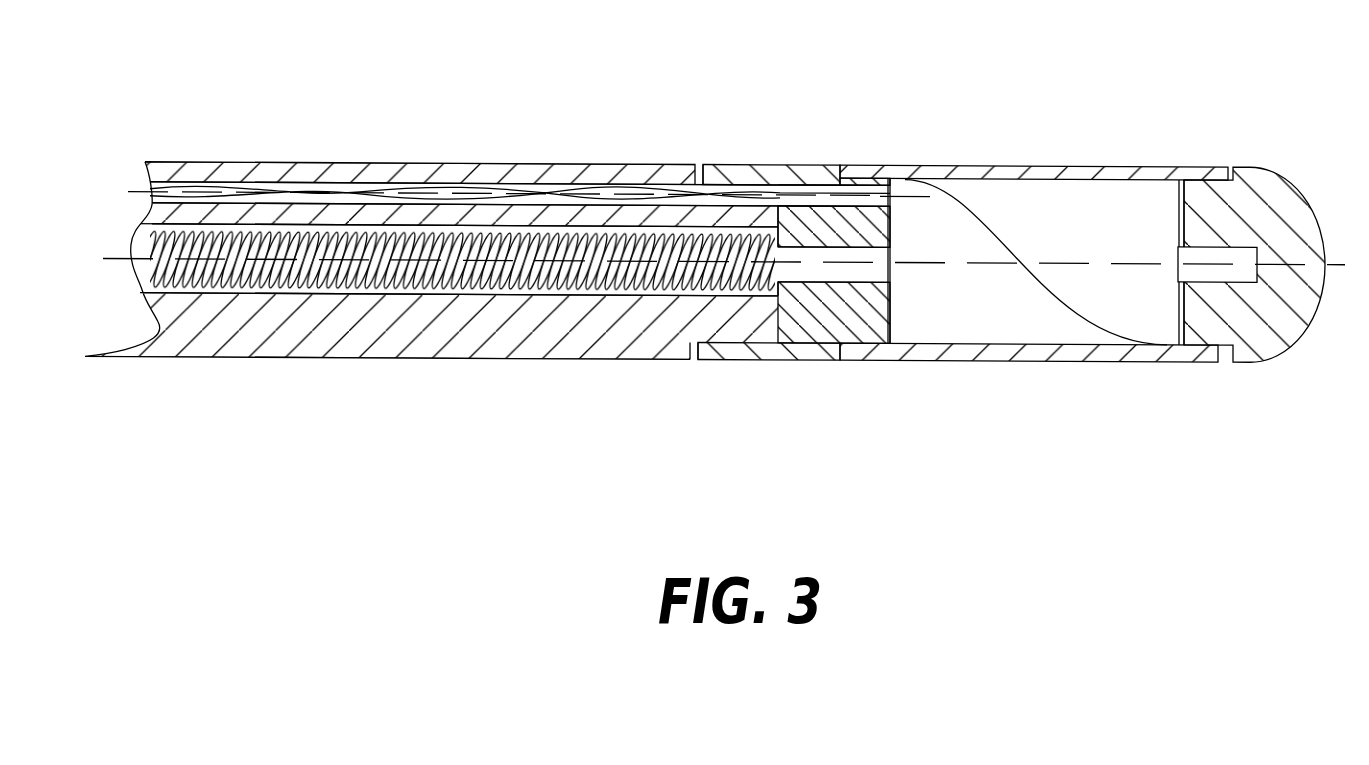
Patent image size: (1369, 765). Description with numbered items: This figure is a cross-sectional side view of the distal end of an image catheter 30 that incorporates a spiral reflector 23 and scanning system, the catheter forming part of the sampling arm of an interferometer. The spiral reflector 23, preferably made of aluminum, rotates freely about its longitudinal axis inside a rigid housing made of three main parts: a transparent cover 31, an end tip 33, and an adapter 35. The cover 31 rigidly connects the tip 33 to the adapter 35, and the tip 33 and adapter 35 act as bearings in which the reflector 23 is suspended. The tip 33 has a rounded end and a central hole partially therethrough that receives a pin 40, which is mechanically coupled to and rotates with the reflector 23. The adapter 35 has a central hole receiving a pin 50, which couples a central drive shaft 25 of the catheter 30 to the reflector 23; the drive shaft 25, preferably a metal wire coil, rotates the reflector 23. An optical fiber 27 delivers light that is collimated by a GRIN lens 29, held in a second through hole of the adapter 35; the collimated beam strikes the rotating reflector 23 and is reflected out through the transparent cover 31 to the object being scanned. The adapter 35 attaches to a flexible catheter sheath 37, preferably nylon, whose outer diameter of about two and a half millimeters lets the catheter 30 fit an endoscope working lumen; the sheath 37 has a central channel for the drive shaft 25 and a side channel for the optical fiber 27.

The spiral reflector 23 is at (1012, 205).
The central drive shaft 25 is at (694, 232).
The optical fiber 27 is at (618, 192).
The GRIN lens 29 is at (822, 188).
The image catheter 30 is at (1092, 477).
The transparent cover 31 is at (967, 360).
The end tip 33 is at (1262, 168).
The adapter 35 is at (780, 360).
The flexible catheter sheath 37 is at (507, 360).
The pin 40 is at (1229, 274).
The pin 50 is at (860, 258).